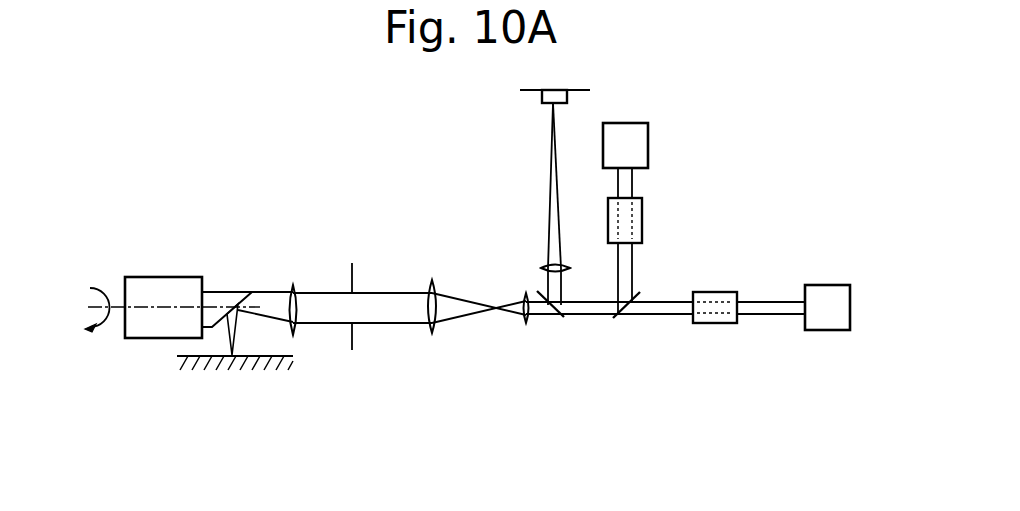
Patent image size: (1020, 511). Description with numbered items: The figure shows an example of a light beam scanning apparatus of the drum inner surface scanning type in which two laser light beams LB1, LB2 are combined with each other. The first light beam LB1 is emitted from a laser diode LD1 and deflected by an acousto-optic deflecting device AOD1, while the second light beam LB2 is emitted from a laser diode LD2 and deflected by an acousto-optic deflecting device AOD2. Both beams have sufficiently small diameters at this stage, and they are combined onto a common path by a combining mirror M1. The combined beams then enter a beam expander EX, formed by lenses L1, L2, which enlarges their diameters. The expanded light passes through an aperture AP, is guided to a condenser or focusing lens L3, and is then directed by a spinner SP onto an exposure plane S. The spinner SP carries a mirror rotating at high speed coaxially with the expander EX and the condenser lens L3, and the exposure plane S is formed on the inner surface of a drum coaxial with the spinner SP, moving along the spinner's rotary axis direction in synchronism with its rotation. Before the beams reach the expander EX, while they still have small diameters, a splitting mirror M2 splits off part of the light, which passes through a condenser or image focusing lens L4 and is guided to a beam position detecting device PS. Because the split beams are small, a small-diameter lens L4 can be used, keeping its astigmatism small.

The spinner SP is at (170, 277).
The exposure plane S is at (188, 356).
The condenser lens L3 is at (293, 285).
The aperture AP is at (352, 268).
The image focusing lens L4 is at (538, 268).
The lens L2 is at (434, 332).
The lens L1 is at (520, 324).
The beam expander EX is at (538, 390).
The splitting mirror M2 is at (565, 318).
The combining mirror M1 is at (612, 318).
The beam position detecting device PS is at (567, 102).
The laser diode LD2 is at (648, 137).
The acousto-optic deflecting device AOD2 is at (642, 213).
The light beam LB2 is at (632, 263).
The acousto-optic deflecting device AOD1 is at (713, 325).
The laser diode LD1 is at (822, 330).
The light beam LB1 is at (668, 315).